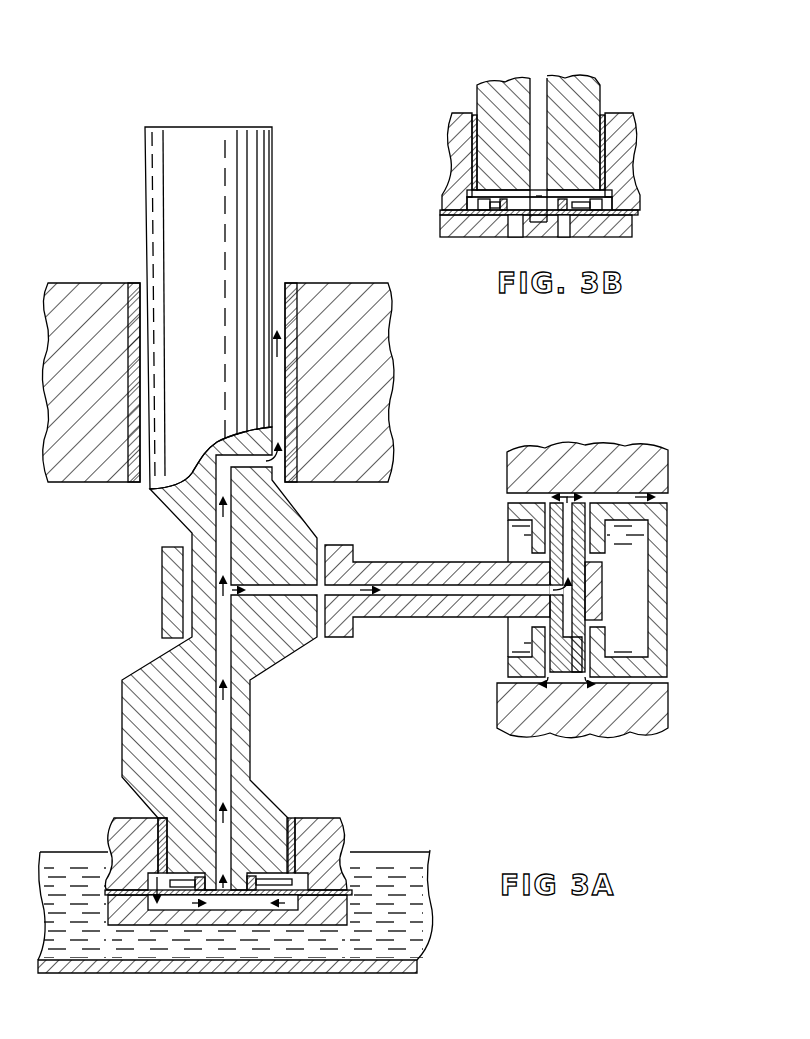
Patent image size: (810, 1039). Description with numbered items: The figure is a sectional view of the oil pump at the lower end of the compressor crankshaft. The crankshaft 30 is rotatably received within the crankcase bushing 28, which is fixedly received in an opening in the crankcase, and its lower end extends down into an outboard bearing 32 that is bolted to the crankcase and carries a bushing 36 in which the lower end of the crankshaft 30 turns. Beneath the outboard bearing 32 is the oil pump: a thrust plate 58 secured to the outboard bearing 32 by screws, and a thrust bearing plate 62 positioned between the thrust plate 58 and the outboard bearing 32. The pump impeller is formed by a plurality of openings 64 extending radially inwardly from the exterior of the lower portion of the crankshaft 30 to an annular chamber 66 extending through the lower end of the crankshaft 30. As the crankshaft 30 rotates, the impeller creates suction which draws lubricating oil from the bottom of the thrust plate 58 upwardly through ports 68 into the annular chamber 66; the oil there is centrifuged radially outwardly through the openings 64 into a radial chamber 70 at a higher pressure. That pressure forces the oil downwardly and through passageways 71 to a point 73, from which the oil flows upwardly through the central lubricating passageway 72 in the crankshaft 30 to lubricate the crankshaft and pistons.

In FIG. 3A, the crankcase bushing 28 is at (293, 283).
In FIG. 3A, the crankshaft 30 is at (127, 755).
In FIG. 3B, the crankshaft 30 is at (495, 83).
In FIG. 3A, the outboard bearing 32 is at (330, 853).
In FIG. 3B, the outboard bearing 32 is at (452, 130).
In FIG. 3A, the bushing 36 is at (290, 820).
In FIG. 3B, the bushing 36 is at (603, 113).
In FIG. 3A, the thrust plate 58 is at (330, 920).
In FIG. 3B, the thrust plate 58 is at (430, 228).
In FIG. 3A, the thrust bearing plate 62 is at (350, 872).
In FIG. 3B, the thrust bearing plate 62 is at (630, 210).
In FIG. 3A, the openings 64 is at (187, 882).
In FIG. 3B, the openings 64 is at (575, 200).
In FIG. 3A, the annular chamber 66 is at (252, 882).
In FIG. 3B, the annular chamber 66 is at (563, 197).
In FIG. 3A, the ports 68 is at (253, 930).
In FIG. 3B, the ports 68 is at (567, 235).
In FIG. 3A, the radial chamber 70 is at (153, 882).
In FIG. 3B, the radial chamber 70 is at (603, 198).
In FIG. 3A, the passageways 71 is at (163, 907).
In FIG. 3A, the central lubricating passageway 72 is at (227, 725).
In FIG. 3B, the central lubricating passageway 72 is at (538, 78).
In FIG. 3A, the point 73 is at (230, 898).
In FIG. 3B, the point 73 is at (537, 223).